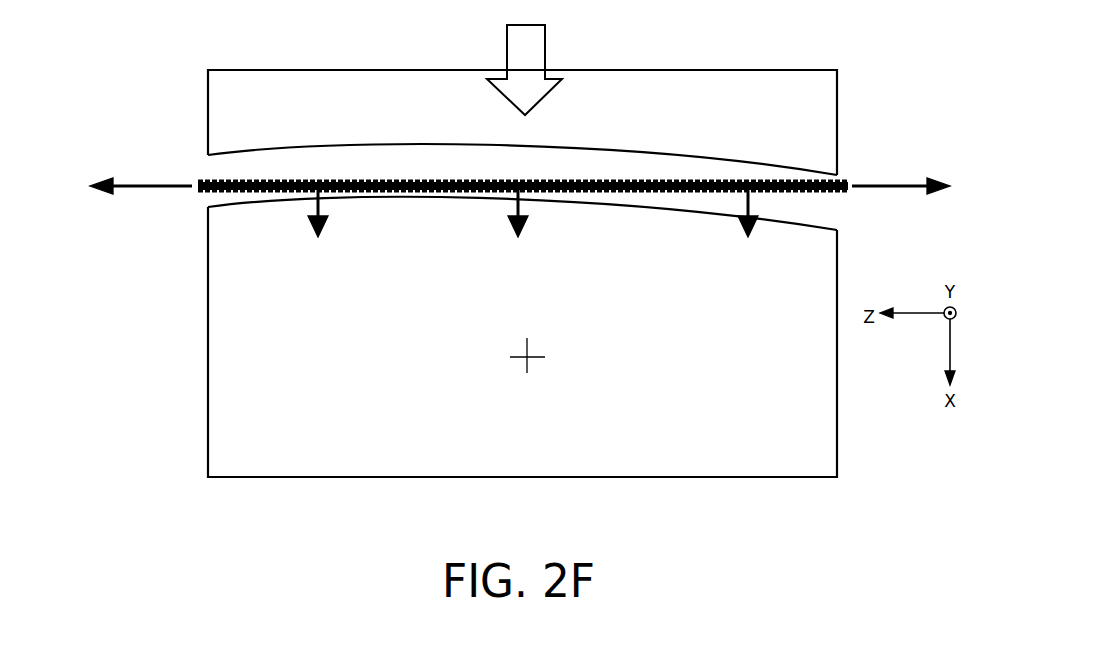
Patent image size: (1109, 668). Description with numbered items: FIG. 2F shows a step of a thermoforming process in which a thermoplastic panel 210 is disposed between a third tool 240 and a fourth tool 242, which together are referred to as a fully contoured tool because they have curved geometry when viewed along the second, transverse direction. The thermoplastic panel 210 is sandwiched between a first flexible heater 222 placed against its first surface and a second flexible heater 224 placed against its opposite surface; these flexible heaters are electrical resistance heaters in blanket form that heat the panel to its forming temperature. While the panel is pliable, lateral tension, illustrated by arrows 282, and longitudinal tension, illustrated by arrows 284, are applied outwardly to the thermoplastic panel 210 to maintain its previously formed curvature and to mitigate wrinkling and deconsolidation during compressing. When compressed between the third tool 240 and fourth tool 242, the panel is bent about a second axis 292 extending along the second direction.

The thermoplastic panel 210 is at (717, 192).
The first flexible heater 222 is at (598, 180).
The second flexible heater 224 is at (577, 193).
The third tool 240 is at (439, 113).
The fourth tool 242 is at (436, 384).
The arrows (lateral tension) 282 is at (322, 207).
The arrows (longitudinal tension) 284 is at (125, 182).
The second axis 292 is at (530, 360).